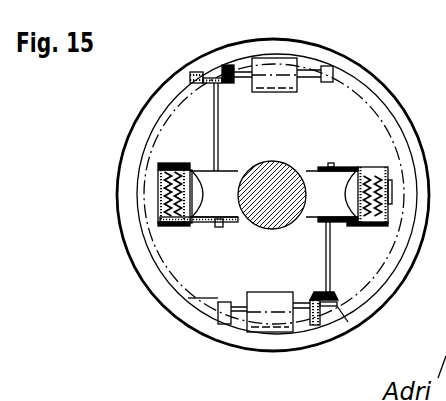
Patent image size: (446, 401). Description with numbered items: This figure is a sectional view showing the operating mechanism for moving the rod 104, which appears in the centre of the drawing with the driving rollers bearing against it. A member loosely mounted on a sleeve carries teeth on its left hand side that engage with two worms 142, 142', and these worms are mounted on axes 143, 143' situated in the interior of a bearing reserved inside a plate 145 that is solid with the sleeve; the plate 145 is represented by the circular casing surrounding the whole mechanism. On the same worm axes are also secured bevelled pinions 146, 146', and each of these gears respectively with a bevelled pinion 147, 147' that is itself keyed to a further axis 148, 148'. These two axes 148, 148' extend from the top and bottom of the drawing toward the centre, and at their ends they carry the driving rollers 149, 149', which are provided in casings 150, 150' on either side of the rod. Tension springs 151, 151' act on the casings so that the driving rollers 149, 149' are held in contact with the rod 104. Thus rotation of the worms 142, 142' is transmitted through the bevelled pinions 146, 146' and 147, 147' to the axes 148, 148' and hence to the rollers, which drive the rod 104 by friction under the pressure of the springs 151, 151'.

The rod 104 is at (266, 219).
The worm 142 is at (260, 54).
The worm 142' is at (269, 299).
The axis 143 is at (212, 57).
The axis 143' is at (292, 339).
The plate 145 is at (348, 63).
The bevelled pinion 146 is at (283, 91).
The bevelled pinion 146' is at (268, 334).
The bevelled pinion 147 is at (184, 68).
The bevelled pinion 147' is at (335, 281).
The axis 148 is at (198, 127).
The axis 148' is at (309, 257).
The driving roller 149 is at (223, 179).
The driving roller 149' is at (320, 179).
The casing 150 is at (199, 235).
The casing 150' is at (345, 183).
The tension spring 151 is at (141, 206).
The tension spring 151' is at (368, 208).